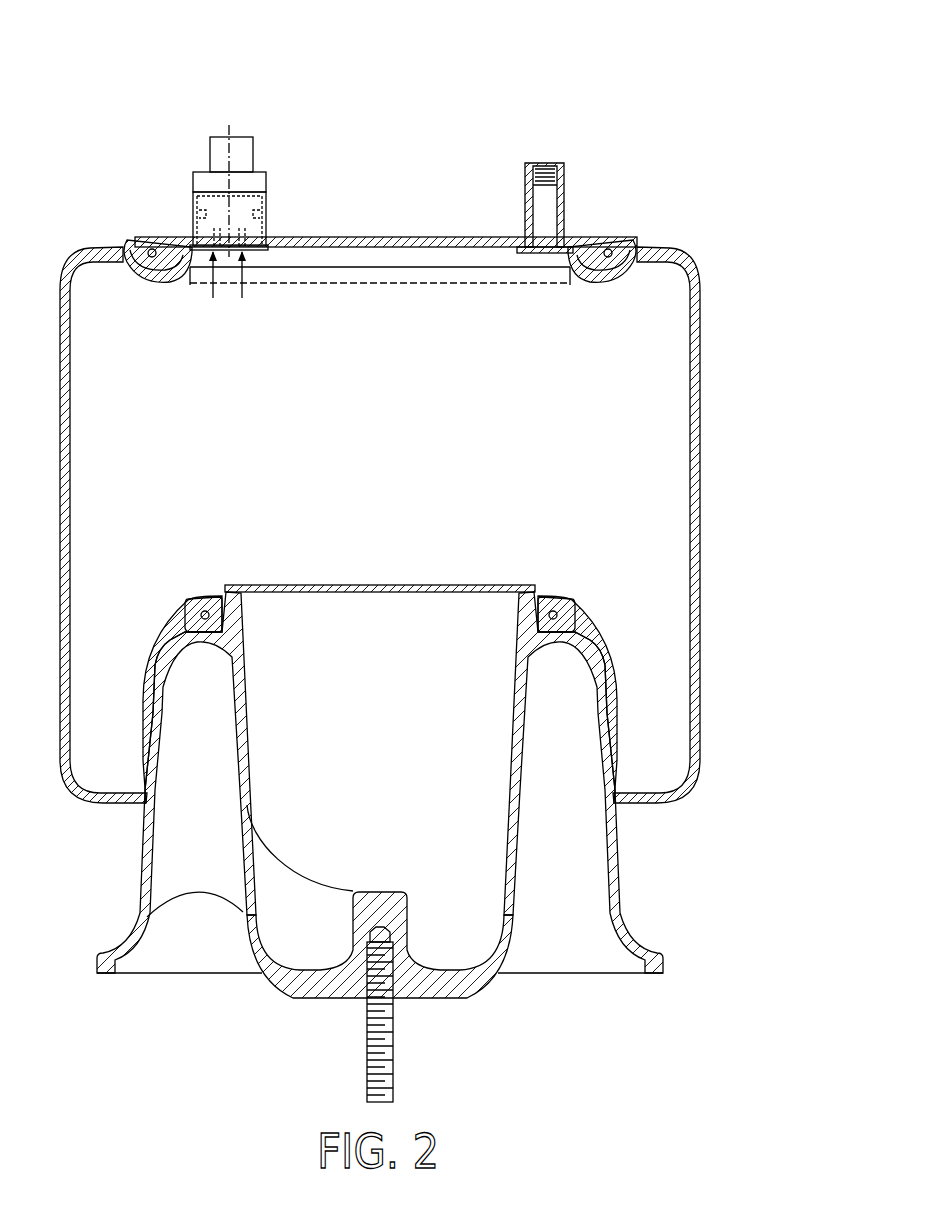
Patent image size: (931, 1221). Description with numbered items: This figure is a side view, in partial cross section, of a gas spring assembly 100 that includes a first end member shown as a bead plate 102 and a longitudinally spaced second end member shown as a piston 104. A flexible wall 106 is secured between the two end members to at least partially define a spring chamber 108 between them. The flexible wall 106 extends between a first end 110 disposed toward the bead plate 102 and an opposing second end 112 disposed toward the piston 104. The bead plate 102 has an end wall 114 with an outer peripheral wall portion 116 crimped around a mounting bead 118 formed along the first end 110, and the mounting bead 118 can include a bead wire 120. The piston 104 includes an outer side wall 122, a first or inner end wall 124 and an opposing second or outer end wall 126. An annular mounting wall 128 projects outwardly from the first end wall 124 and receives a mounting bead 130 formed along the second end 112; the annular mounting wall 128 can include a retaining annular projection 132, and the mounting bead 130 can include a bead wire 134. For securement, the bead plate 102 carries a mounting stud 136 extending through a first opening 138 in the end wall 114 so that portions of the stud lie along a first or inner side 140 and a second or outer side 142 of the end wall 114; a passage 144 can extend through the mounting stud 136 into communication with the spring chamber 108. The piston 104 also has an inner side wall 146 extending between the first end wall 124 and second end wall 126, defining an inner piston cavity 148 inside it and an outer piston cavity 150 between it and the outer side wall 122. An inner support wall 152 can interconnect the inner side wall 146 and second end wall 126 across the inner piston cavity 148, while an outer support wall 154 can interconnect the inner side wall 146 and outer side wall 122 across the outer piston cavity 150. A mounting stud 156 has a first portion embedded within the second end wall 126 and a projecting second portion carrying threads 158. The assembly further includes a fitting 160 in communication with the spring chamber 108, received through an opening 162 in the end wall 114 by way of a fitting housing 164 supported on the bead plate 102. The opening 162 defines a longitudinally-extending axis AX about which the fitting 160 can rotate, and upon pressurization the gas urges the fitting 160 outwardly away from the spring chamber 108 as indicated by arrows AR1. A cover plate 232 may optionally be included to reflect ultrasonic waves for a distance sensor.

The gas spring assembly 100 is at (658, 180).
The bead plate 102 is at (350, 236).
The piston 104 is at (272, 990).
The flexible wall 106 is at (708, 413).
The spring chamber 108 is at (620, 447).
The first end 110 is at (157, 292).
The second end 112 is at (160, 603).
The end wall 114 is at (449, 243).
The outer peripheral wall portion 116 is at (130, 240).
The mounting bead 118 is at (627, 243).
The bead wire 120 is at (610, 249).
The outer side wall 122 is at (145, 868).
The first end wall 124 is at (582, 627).
The second end wall 126 is at (425, 1000).
The annular mounting wall 128 is at (527, 628).
The mounting bead 130 is at (563, 600).
The annular projection 132 is at (212, 599).
The bead wire 134 is at (551, 599).
The mounting stud 136 is at (524, 178).
The first opening 138 is at (519, 247).
The first side 140 is at (374, 268).
The second side 142 is at (398, 238).
The passage 144 is at (549, 163).
The inner side wall 146 is at (250, 693).
The inner piston cavity 148 is at (363, 719).
The outer piston cavity 150 is at (543, 829).
The inner support wall 152 is at (305, 870).
The outer support wall 154 is at (197, 898).
The mounting stud 156 is at (366, 1083).
The threads 158 is at (366, 1040).
The fitting 160 is at (209, 160).
The opening 162 is at (195, 243).
The fitting housing 164 is at (270, 211).
The cover plate 232 is at (438, 584).
The longitudinally-extending axis AX is at (236, 150).
The arrows AR1 is at (213, 298).